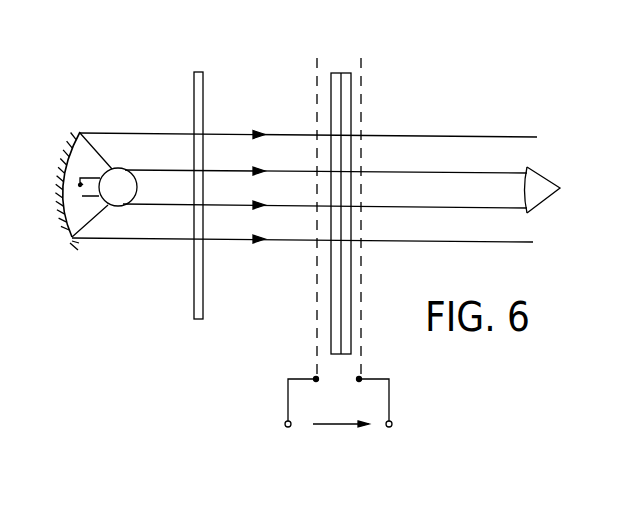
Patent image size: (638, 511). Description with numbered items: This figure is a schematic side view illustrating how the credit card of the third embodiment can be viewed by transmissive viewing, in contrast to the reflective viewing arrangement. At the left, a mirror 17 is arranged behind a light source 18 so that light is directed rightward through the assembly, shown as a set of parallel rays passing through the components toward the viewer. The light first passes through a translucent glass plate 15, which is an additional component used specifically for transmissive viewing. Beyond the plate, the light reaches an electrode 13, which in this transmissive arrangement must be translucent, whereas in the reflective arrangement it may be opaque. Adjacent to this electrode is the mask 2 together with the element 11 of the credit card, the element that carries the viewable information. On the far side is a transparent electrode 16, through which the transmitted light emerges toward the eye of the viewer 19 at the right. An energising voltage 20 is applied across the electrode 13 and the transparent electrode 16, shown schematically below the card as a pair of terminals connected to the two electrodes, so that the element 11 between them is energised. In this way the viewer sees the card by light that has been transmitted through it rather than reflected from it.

The mask 2 is at (350, 73).
The element of the credit card 11 is at (338, 73).
The electrode 13 is at (317, 88).
The translucent glass plate 15 is at (198, 72).
The transparent electrode 16 is at (362, 88).
The mirror 17 is at (62, 236).
The light source 18 is at (122, 176).
The eye of the viewer 19 is at (540, 178).
The energising voltage 20 is at (328, 415).